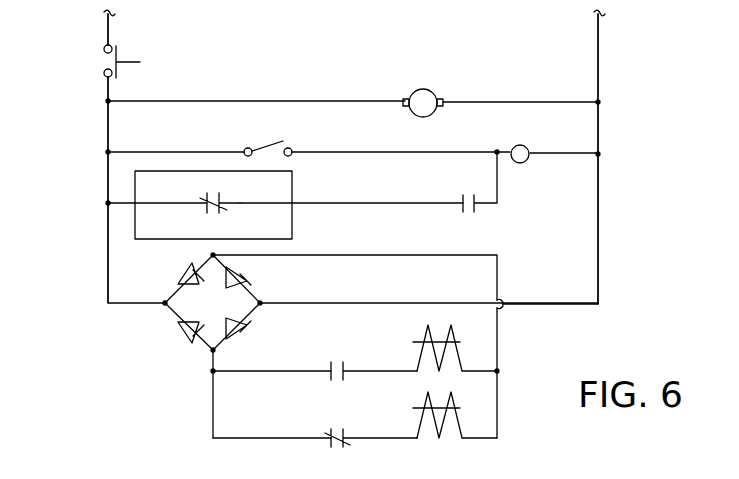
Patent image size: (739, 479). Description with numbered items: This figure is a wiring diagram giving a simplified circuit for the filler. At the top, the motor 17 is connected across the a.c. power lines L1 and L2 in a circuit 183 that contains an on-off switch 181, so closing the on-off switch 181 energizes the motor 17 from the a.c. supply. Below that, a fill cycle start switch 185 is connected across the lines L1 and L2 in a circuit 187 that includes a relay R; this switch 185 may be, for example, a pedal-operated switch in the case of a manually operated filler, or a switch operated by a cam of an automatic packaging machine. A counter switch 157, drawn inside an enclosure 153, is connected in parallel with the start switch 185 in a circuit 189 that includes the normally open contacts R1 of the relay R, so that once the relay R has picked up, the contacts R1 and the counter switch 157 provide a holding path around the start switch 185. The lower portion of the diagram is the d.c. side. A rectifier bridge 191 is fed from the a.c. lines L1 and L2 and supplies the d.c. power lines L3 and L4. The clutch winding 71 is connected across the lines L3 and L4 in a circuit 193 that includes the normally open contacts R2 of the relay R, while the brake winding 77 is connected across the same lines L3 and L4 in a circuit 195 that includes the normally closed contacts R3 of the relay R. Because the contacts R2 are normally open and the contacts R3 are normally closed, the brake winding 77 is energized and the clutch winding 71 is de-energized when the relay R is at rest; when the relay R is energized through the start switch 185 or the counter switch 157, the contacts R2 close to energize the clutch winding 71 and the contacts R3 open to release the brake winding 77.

The on-off switch 181 is at (110, 62).
The a.c. power line L1 is at (108, 135).
The circuit 183 is at (240, 100).
The motor 17 is at (433, 82).
The fill cycle start switch 185 is at (266, 146).
The circuit 187 is at (378, 162).
The relay R is at (524, 162).
The a.c. power line L2 is at (600, 137).
The timer 153 is at (296, 190).
The counter switch 157 is at (222, 197).
The circuit 189 is at (388, 204).
The normally open contacts R1 is at (463, 212).
The d.c. power line L3 is at (327, 256).
The rectifier bridge 191 is at (172, 313).
The circuit 193 is at (248, 373).
The normally open contacts R2 is at (334, 381).
The d.c. power line L4 is at (213, 407).
The circuit 195 is at (236, 440).
The normally closed contacts R3 is at (334, 448).
The clutch winding 71 is at (421, 336).
The brake winding 77 is at (418, 421).